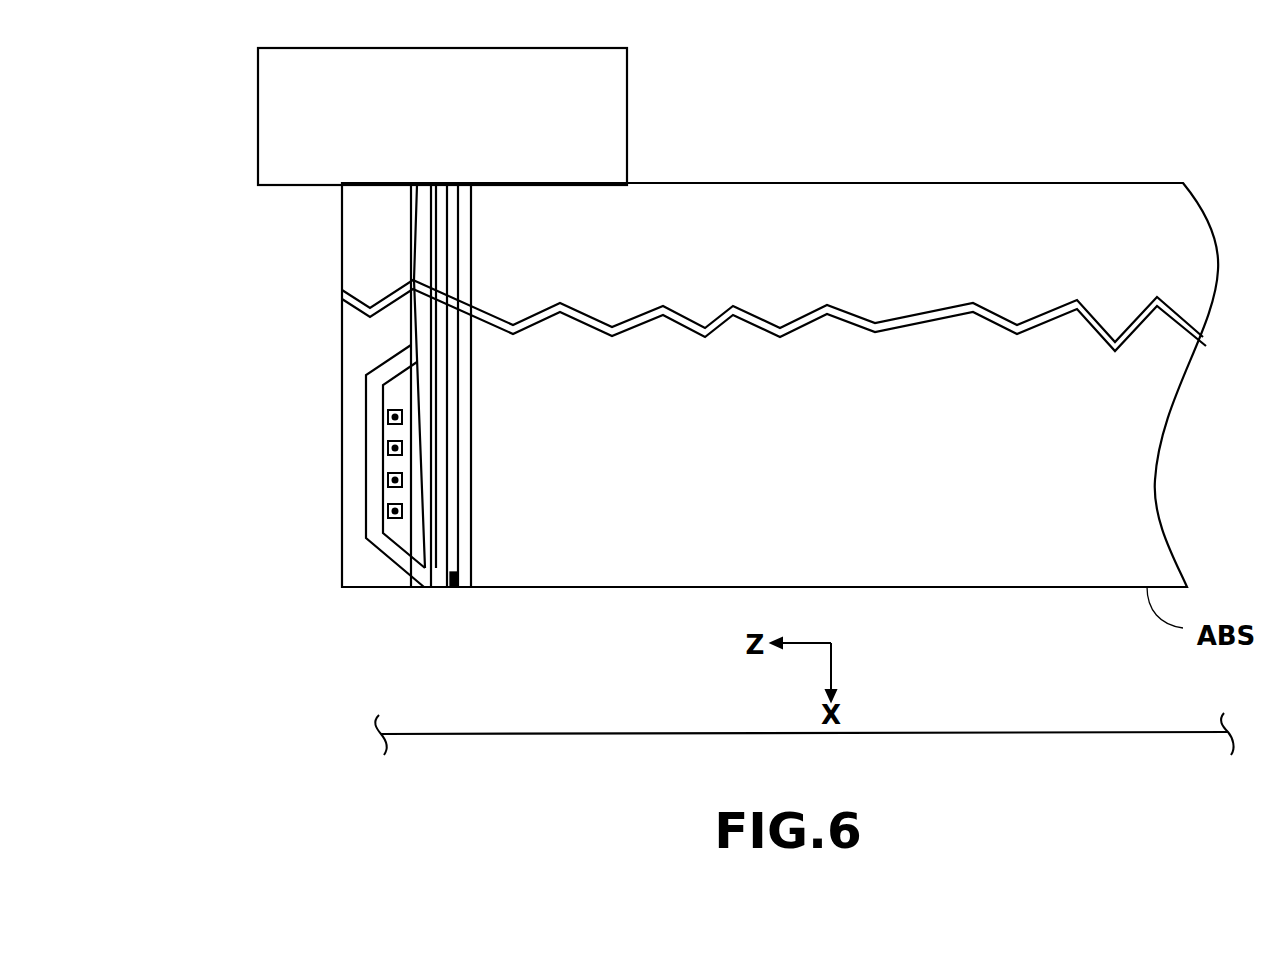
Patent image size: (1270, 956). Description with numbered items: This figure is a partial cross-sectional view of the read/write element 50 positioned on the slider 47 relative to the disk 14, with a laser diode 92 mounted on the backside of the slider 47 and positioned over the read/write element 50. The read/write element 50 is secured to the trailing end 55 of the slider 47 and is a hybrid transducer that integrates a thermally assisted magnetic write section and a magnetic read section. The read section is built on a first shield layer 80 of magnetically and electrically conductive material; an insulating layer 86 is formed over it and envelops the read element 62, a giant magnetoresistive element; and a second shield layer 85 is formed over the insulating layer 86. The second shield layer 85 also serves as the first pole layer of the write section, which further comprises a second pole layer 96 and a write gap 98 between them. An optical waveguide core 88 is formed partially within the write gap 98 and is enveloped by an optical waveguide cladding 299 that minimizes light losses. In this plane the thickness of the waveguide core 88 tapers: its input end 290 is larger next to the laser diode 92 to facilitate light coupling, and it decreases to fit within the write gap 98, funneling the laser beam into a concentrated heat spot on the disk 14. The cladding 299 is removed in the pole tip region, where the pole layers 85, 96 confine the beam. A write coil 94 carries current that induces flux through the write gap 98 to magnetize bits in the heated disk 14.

The laser diode 92 is at (612, 112).
The slider 47 is at (835, 388).
The input end 290 is at (417, 185).
The optical waveguide cladding 299 is at (415, 333).
The optical waveguide core 88 is at (423, 400).
The insulating layer 86 is at (455, 470).
The first shield layer 80 is at (468, 547).
The read element 62 is at (455, 592).
The read/write element 50 is at (345, 494).
The second pole layer 96 is at (387, 555).
The write gap 98 is at (432, 588).
The write coil 94 is at (387, 480).
The second shield layer 85 is at (434, 590).
The trailing end 55 is at (505, 588).
The disk 14 is at (1070, 732).